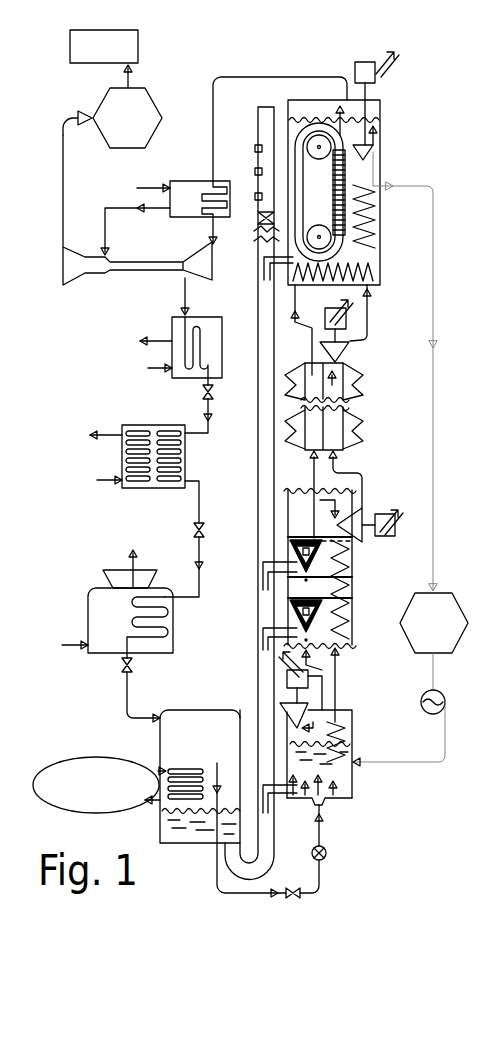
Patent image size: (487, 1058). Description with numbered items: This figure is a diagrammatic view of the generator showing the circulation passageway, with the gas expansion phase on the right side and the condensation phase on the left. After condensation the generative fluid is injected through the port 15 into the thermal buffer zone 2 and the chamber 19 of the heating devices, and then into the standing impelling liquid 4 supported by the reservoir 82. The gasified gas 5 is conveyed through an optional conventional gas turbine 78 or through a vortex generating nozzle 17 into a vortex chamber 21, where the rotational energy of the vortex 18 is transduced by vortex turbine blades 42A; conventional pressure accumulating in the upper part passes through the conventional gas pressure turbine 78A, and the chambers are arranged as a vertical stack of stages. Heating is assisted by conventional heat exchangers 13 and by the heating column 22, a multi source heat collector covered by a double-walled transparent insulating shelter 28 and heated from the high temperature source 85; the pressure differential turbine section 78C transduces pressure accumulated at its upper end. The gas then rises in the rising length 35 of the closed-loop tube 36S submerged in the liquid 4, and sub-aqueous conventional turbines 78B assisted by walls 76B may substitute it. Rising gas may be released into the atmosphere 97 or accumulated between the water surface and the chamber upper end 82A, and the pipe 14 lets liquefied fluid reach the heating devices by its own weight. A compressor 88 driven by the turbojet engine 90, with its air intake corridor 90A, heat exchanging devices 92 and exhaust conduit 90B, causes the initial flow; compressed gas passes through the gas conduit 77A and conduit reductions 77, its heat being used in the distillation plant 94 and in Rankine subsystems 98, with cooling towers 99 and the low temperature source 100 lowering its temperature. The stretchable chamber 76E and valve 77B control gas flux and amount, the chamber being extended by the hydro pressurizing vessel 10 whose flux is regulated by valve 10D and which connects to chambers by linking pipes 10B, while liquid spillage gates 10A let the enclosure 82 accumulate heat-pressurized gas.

The thermal buffer zone 2 is at (340, 773).
The impelling liquid 4 is at (323, 628).
The generative fluid or gas 5 is at (297, 503).
The hydro pressurizing vessel 10 is at (255, 142).
The liquid spillage gates 10A is at (213, 100).
The linking pipes 10B is at (267, 638).
The valve 10D is at (258, 224).
The conventional heat exchanger 13 is at (350, 568).
The pipe 14 is at (369, 292).
The port 15 is at (353, 794).
The vortex generating nozzle 17 is at (295, 580).
The vortex 18 is at (290, 557).
The chamber 19 is at (347, 710).
The vortex chamber 21 is at (367, 623).
The heating column 22 is at (342, 373).
The double-walled transparent insulating shelter 28 is at (356, 440).
The rising length 35 is at (337, 207).
The closed-loop tube 36S is at (350, 58).
The vortex turbine blades 42A is at (287, 552).
The chambering wall 76B is at (378, 163).
The stretchable chamber 76E is at (187, 845).
The conduit reduction valve 77 is at (214, 397).
The gas conduit 77A is at (184, 290).
The valve 77B is at (326, 858).
The conventional gas turbine 78 is at (290, 705).
The conventional gas pressure turbine 78A is at (372, 512).
The gas/vapor conventional turbine 78B is at (390, 147).
The pressure differential turbine section 78C is at (342, 343).
The reservoir 82 is at (392, 276).
The chamber upper end 82A is at (305, 98).
The high temperature source 85 is at (145, 137).
The compressor 88 is at (200, 252).
The turbojet engine 90 is at (63, 287).
The air intake corridor 90A is at (100, 208).
The conduit 90B is at (63, 135).
The heat exchanging devices 92 is at (193, 181).
The distillation plant 94 is at (190, 380).
The atmosphere 97 is at (462, 68).
The co-generative binary or Rankine cycle subsystem 98 is at (120, 493).
The cooling tower 99 is at (88, 614).
The low temperature source 100 is at (111, 799).